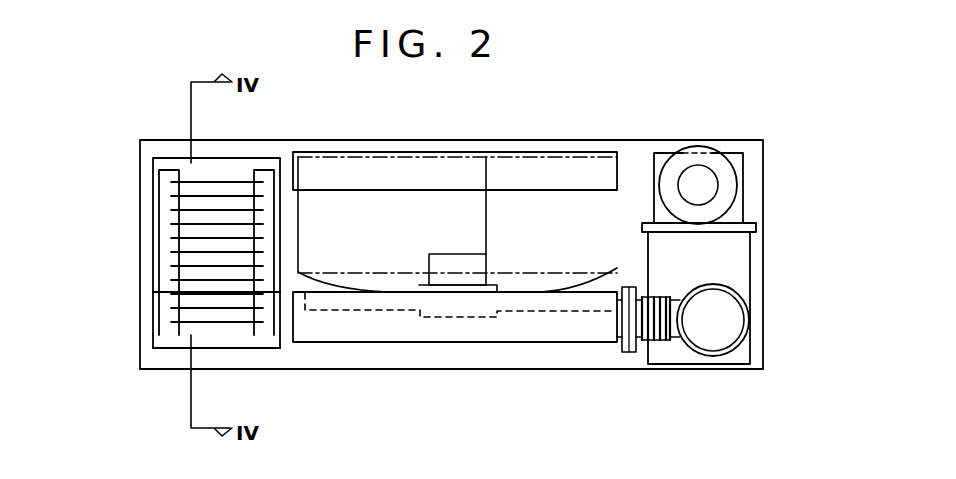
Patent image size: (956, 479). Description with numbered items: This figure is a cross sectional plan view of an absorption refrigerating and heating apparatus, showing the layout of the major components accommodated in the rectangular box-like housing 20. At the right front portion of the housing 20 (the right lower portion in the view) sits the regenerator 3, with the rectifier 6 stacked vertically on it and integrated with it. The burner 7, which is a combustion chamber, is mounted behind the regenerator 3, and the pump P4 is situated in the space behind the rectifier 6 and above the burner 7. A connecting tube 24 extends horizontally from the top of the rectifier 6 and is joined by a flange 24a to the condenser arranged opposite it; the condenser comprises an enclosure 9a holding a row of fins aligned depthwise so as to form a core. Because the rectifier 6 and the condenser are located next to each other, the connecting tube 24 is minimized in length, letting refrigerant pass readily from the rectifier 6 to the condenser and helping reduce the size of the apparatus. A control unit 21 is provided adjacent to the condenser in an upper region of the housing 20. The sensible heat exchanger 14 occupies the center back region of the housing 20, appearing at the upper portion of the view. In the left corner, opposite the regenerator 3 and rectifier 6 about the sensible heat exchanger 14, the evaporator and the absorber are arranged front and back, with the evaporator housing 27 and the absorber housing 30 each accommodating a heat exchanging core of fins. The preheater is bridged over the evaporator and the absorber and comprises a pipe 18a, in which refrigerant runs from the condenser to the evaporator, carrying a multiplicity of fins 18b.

The regenerator 3 is at (737, 258).
The rectifier 6 is at (728, 318).
The burner 7 is at (745, 170).
The enclosure 9a is at (466, 342).
The sensible heat exchanger 14 is at (561, 158).
The pipe 18a is at (272, 157).
The fins 18b is at (223, 325).
The housing 20 is at (390, 370).
The control unit 21 is at (413, 157).
The connecting tube 24 is at (655, 340).
The flange 24a is at (630, 352).
The evaporator housing 27 is at (265, 349).
The absorber housing 30 is at (255, 157).
The pump P4 is at (714, 162).